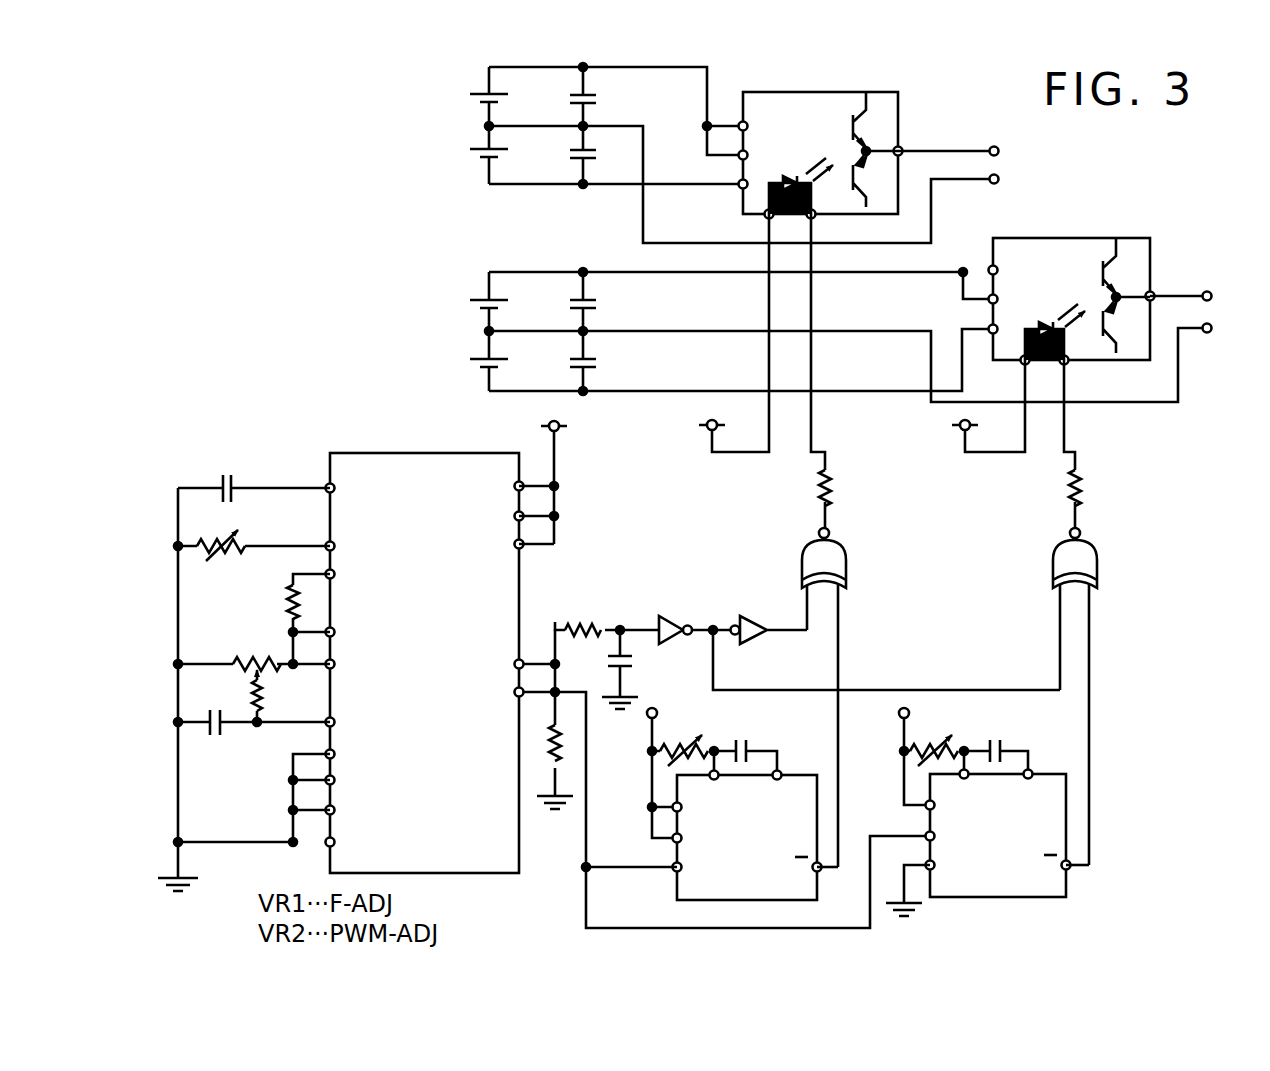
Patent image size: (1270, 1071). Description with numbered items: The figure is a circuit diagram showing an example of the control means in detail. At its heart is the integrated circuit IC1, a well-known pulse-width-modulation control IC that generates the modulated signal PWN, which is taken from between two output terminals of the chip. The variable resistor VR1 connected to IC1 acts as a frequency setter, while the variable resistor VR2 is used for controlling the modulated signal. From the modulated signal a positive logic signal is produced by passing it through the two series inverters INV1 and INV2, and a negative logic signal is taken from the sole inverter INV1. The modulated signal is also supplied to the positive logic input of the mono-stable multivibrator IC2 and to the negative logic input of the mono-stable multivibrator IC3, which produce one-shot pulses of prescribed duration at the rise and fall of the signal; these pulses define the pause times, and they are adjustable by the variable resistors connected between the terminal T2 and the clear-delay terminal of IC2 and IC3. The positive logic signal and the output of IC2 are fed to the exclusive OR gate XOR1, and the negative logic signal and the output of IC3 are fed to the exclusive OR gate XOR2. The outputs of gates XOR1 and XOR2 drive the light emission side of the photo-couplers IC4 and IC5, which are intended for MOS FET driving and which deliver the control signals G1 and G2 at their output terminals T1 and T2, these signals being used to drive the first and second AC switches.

The PWM control integrated circuit IC1 is at (425, 663).
The mono-stable multivibrator IC2 is at (756, 836).
The mono-stable multivibrator IC3 is at (1008, 834).
The photo-coupler IC4 is at (821, 155).
The photo-coupler IC5 is at (1072, 301).
The inverter INV1 is at (672, 618).
The inverter INV2 is at (759, 620).
The exclusive OR gate XOR1 is at (848, 568).
The exclusive OR gate XOR2 is at (1098, 566).
The variable resistor VR1 is at (226, 545).
The variable resistor VR2 is at (207, 687).
The terminal T1 is at (942, 150).
The terminal T2 is at (1180, 295).
The control signal G1 is at (1021, 168).
The control signal G2 is at (1232, 317).
The PWM signal PWN is at (553, 622).